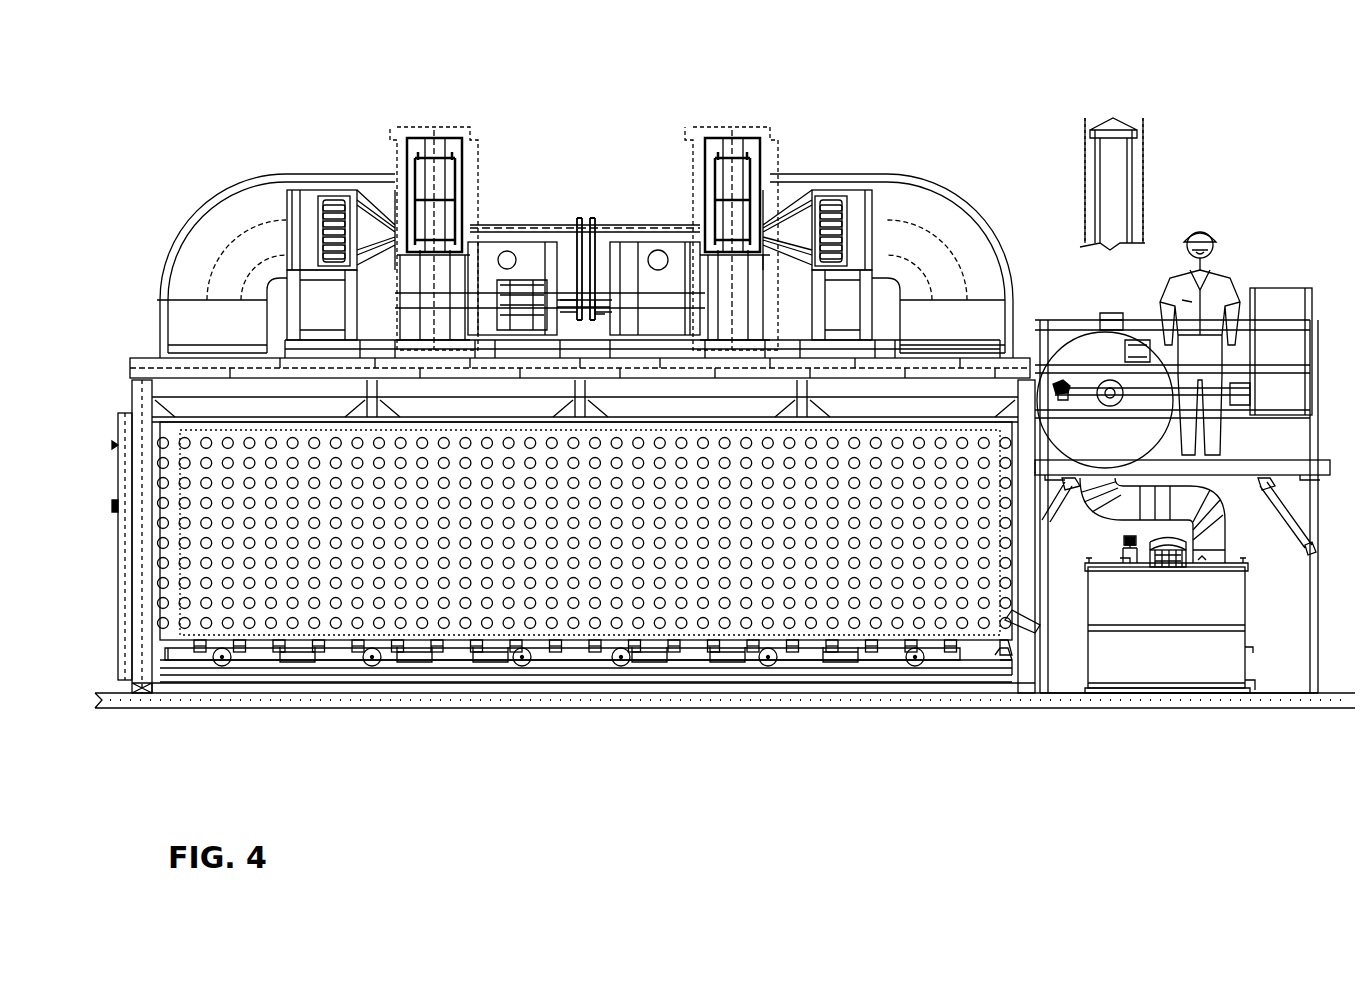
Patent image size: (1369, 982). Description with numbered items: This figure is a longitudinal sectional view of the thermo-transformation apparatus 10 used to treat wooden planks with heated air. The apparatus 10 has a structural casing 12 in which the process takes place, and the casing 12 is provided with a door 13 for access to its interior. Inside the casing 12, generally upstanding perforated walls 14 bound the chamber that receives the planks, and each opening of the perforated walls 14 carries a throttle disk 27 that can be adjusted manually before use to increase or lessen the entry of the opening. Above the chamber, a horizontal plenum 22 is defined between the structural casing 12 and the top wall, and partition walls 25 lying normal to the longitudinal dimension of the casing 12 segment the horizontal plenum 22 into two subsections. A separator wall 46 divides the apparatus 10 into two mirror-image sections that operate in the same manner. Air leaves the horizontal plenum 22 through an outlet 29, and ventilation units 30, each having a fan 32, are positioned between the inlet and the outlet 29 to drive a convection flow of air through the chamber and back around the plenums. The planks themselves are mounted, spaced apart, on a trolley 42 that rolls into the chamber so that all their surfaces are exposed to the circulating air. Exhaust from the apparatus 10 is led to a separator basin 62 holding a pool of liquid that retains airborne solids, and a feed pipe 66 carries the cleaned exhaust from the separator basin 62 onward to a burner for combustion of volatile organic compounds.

The apparatus 10 is at (218, 142).
The structural casing 12 is at (1032, 593).
The door 13 is at (110, 492).
The perforated walls 14 is at (152, 385).
The horizontal plenum 22 is at (661, 372).
The partition walls 25 is at (367, 388).
The throttle disks 27 is at (520, 648).
The outlet 29 is at (186, 247).
The ventilation units 30 is at (492, 108).
The fan 32 is at (410, 160).
The trolley 42 is at (228, 666).
The separator wall 46 is at (607, 228).
The separator basin 62 is at (1260, 627).
The feed pipe 66 is at (1227, 520).